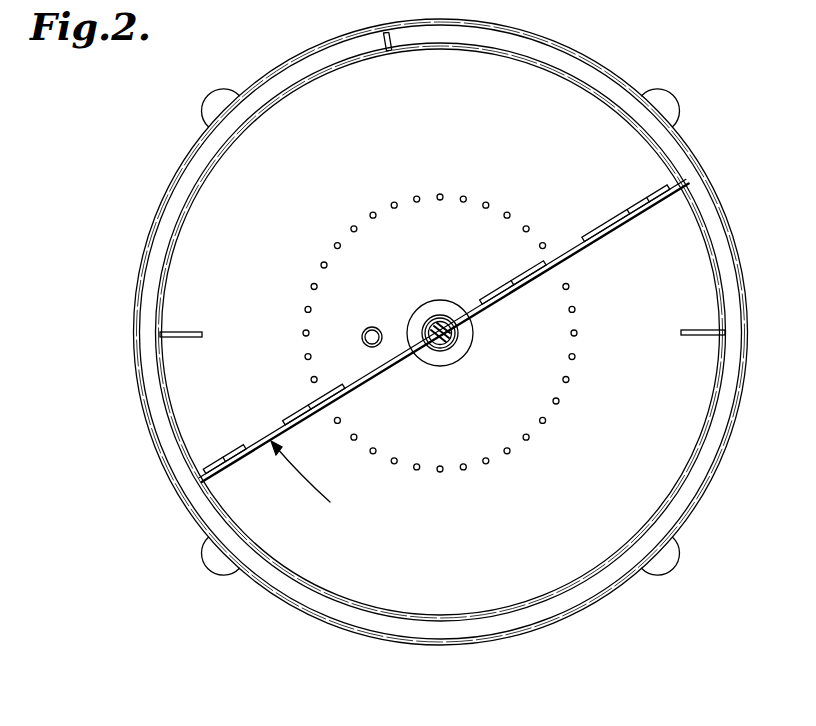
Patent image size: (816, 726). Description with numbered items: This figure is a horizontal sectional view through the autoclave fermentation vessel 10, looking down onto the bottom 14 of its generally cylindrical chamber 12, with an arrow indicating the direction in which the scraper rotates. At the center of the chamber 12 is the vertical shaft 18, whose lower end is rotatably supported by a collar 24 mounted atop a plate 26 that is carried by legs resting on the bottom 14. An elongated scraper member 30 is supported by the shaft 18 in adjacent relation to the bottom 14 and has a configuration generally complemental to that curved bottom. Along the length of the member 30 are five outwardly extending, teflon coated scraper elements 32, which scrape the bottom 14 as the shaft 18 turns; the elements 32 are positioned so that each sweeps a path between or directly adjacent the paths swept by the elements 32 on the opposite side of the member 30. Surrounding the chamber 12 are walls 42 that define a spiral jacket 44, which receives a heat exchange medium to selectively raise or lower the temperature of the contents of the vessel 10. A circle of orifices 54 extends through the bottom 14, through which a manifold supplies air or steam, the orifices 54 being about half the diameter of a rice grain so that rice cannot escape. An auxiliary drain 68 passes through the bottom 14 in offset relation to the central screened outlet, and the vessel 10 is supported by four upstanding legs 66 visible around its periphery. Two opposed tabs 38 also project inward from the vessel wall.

The autoclave fermentation vessel 10 is at (138, 166).
The chamber 12 is at (429, 156).
The bottom 14 is at (196, 378).
The vertical shaft 18 is at (452, 348).
The collar 24 is at (438, 316).
The plate 26 is at (472, 340).
The scraper member 30 is at (580, 258).
The scraper elements 32 is at (523, 270).
The stop tabs 38 is at (188, 333).
The walls 42 is at (511, 633).
The jacket 44 is at (290, 595).
The orifices 54 is at (528, 440).
The upstanding legs 66 is at (674, 92).
The auxiliary drain 68 is at (368, 326).